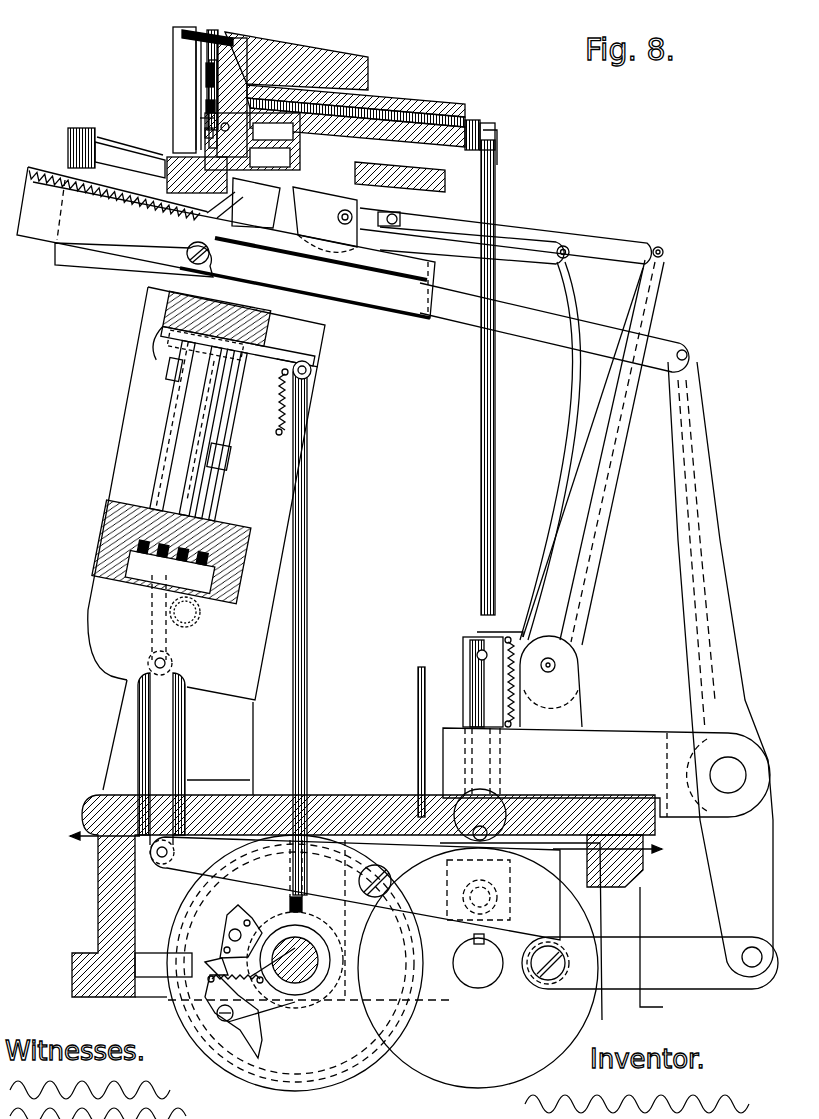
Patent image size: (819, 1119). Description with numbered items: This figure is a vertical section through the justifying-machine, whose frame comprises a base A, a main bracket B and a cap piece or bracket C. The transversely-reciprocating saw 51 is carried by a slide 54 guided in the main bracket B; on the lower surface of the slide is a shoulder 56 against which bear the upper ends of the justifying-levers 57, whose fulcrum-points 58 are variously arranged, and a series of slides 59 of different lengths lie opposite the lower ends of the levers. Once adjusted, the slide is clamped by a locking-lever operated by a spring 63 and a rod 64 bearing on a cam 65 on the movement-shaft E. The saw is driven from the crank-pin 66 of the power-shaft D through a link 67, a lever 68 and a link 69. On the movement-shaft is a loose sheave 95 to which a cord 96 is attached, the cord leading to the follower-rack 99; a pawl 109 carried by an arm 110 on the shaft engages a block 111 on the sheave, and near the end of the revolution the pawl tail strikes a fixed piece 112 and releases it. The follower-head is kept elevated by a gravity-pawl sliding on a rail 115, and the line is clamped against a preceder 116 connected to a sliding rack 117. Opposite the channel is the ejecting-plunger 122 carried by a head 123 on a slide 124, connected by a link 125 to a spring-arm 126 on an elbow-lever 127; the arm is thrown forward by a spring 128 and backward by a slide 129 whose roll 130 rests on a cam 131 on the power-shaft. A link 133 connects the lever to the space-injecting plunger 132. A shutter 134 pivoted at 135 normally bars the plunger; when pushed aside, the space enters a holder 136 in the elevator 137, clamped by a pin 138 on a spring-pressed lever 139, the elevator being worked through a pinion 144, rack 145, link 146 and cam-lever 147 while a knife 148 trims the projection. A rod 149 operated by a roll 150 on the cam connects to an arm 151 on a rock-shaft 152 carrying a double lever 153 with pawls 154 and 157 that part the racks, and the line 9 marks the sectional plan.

The saw 51 is at (226, 242).
The slide 54 is at (197, 316).
The shoulder 56 is at (213, 358).
The justifying-levers 57 is at (171, 425).
The fulcrum-points 58 is at (190, 412).
The slides 59 is at (192, 556).
The spring 63 is at (276, 400).
The rod 64 is at (308, 535).
The cam 65 is at (284, 910).
The crank-pin 66 is at (554, 980).
The link 67 is at (722, 972).
The lever 68 is at (692, 675).
The link 69 is at (545, 335).
The sheave 95 is at (297, 1080).
The cord 96 is at (418, 722).
The follower-rack 99 is at (207, 120).
The pawl 109 is at (233, 1050).
The arm 110 is at (262, 1005).
The block 111 is at (230, 918).
The fixed piece 112 is at (183, 967).
The rail 115 is at (220, 60).
The preceder 116 is at (207, 133).
The sliding rack 117 is at (210, 63).
The ejecting-plunger 122 is at (138, 136).
The head 123 is at (68, 143).
The slide 124 is at (130, 160).
The link 125 is at (540, 252).
The spring-arm 126 is at (584, 300).
The elbow-lever 127 is at (598, 560).
The spring 128 is at (516, 705).
The slide 129 is at (472, 655).
The roll 130 is at (508, 806).
The cam 131 is at (551, 931).
The space-injecting plunger 132 is at (400, 168).
The link 133 is at (578, 232).
The shutter 134 is at (206, 78).
The pivot 135 is at (182, 30).
The groove or holder 136 is at (270, 158).
The elevator 137 is at (252, 141).
The pin 138 is at (256, 203).
The spring-pressed lever 139 is at (325, 219).
The pinion 144 is at (200, 617).
The rack 145 is at (155, 637).
The link 146 is at (165, 757).
The cam-lever 147 is at (355, 888).
The knife 148 is at (230, 198).
The rod 149 is at (494, 491).
The roll 150 is at (492, 858).
The arm 151 is at (490, 128).
The rock-shaft 152 is at (412, 104).
The double lever 153 is at (240, 50).
The pawl 154 is at (213, 34).
The pawl 157 is at (206, 104).
The section line 9 is at (364, 844).
The base A is at (355, 896).
The main bracket B is at (206, 541).
The cap piece or bracket C is at (296, 59).
The power-shaft D is at (478, 968).
The movement-shaft E is at (307, 987).